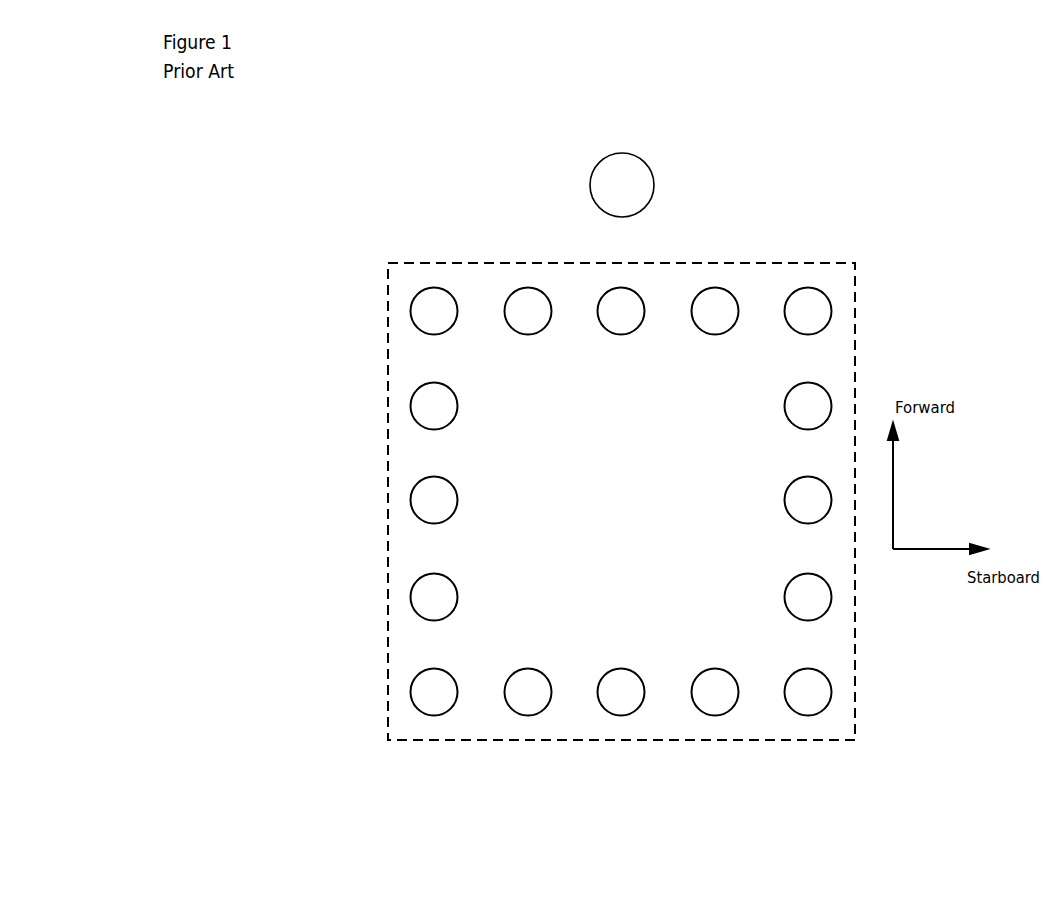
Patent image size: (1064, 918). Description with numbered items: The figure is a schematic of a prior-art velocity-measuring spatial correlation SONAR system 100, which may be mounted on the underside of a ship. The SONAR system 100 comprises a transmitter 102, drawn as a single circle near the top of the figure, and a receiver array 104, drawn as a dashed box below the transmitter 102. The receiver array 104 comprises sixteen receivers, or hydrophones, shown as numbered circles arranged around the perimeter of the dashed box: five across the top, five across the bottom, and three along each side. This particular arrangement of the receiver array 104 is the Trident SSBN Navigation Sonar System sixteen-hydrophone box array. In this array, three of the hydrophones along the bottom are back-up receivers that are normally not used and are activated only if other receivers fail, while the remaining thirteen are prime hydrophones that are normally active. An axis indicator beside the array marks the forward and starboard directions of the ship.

The SONAR system 100 is at (426, 145).
The transmitter 102 is at (646, 198).
The receiver array 104 is at (662, 481).